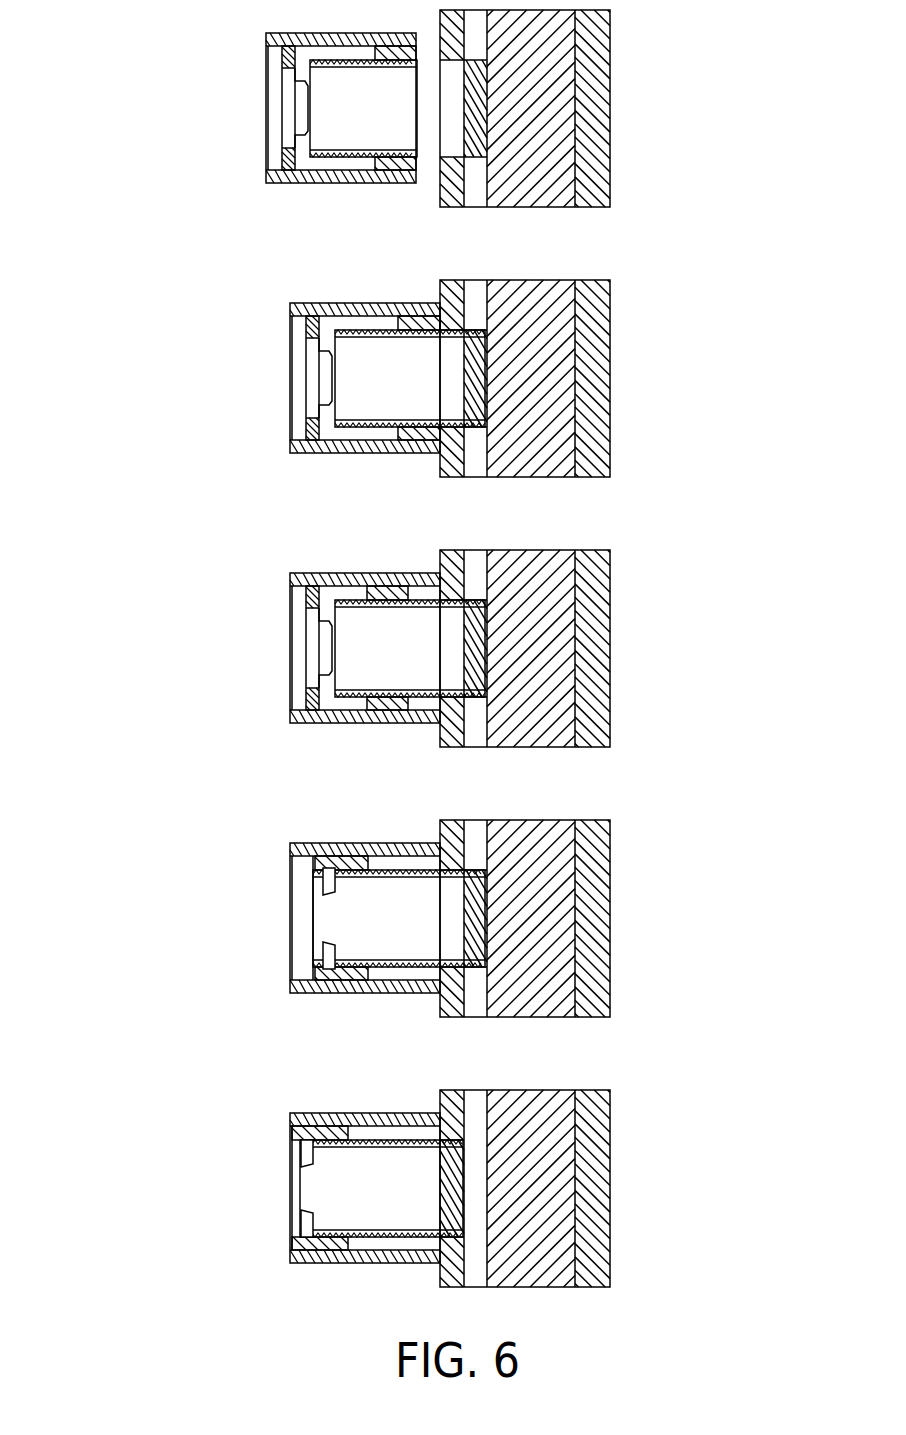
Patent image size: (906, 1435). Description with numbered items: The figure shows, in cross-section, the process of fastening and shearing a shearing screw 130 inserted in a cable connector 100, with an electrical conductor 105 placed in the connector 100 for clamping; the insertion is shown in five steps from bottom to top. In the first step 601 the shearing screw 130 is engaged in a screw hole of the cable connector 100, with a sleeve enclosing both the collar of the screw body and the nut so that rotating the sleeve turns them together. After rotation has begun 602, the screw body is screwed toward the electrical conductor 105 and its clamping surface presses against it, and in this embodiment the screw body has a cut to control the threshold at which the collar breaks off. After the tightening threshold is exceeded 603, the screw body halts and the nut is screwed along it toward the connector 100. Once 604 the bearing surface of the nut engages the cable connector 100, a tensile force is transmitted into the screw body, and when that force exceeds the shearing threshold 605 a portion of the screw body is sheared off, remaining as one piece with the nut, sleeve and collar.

The cable connector 100 is at (458, 1103).
The electrical conductor 105 is at (537, 1203).
The shearing screw 130 is at (318, 1187).
The first step 601 is at (177, 1114).
The tightening step 602 is at (170, 862).
The threshold exceeded step 603 is at (170, 578).
The nut engagement step 604 is at (176, 332).
The shearing step 605 is at (166, 112).